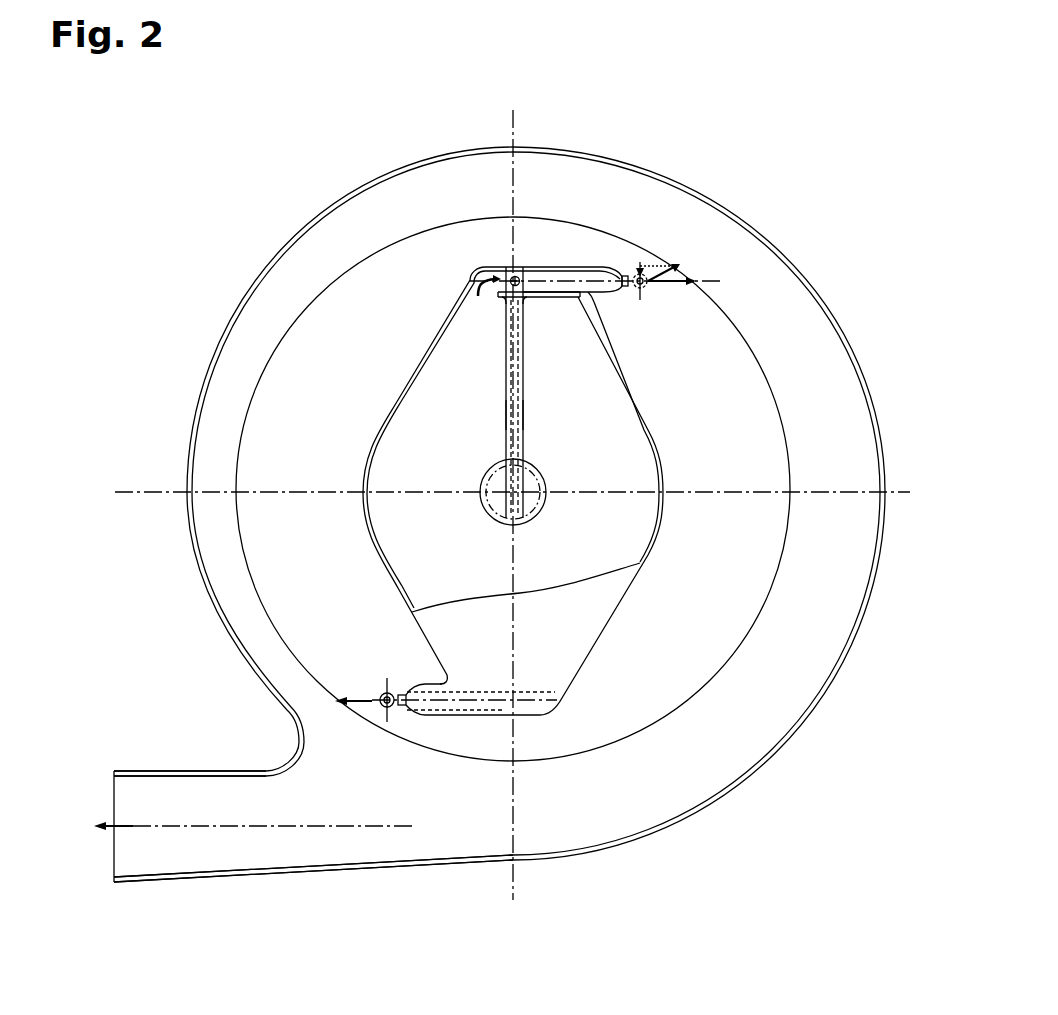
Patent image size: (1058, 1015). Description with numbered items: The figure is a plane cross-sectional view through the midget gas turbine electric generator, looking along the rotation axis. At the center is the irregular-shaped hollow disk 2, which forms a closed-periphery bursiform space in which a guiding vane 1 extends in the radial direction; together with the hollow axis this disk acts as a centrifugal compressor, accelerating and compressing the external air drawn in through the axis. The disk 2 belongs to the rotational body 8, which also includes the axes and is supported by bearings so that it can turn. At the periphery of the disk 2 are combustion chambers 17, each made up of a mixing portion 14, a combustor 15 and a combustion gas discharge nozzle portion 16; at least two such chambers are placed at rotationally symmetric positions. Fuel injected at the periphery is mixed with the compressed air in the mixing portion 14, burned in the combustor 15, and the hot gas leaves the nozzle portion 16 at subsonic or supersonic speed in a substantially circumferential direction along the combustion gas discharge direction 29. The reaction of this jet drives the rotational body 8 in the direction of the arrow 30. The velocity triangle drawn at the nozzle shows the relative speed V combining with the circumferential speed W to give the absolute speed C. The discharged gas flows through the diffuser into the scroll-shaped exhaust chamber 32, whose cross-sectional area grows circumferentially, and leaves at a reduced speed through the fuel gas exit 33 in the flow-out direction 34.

The guiding vane 1 is at (524, 388).
The irregular-shaped hollow disk 2 is at (660, 445).
The rotational body 8 is at (617, 615).
The mixing portion 14 is at (537, 276).
The combustor 15 is at (566, 274).
The combustion gas discharge nozzle portion 16 is at (624, 290).
The combustion chamber 17 is at (543, 265).
The combustion gas discharge direction 29 is at (684, 284).
The arrow indicating rotational direction 30 is at (522, 411).
The exhaust chamber 32 is at (751, 222).
The fuel gas exit 33 is at (114, 803).
The outlet opening 34 is at (103, 832).